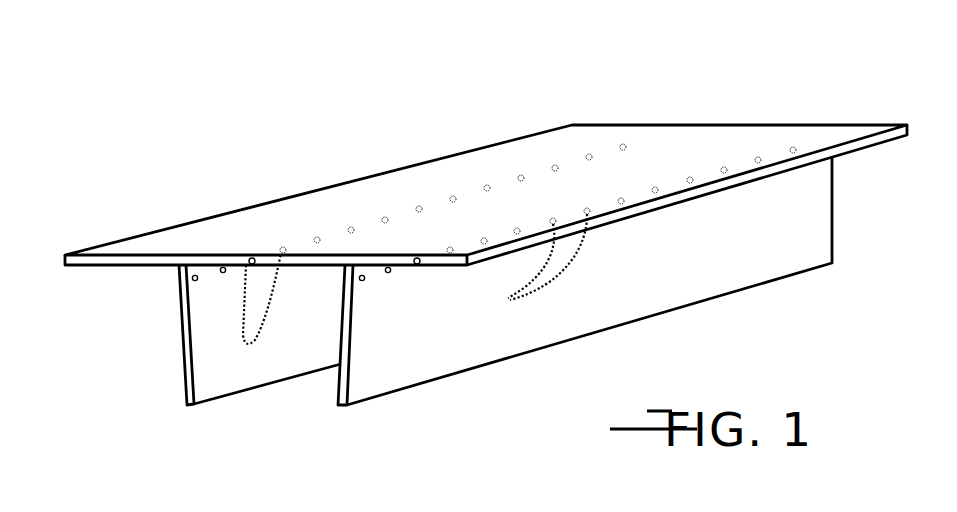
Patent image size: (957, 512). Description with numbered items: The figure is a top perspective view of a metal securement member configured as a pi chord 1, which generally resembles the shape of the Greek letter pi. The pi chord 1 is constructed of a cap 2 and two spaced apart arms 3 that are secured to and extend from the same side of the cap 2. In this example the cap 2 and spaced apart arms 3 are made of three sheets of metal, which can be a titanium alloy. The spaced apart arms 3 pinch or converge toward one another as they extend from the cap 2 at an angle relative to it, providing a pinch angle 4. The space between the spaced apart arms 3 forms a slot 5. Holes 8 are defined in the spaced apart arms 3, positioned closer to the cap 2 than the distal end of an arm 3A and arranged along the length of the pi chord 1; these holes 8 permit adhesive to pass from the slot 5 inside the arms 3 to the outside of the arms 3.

The pi chord 1 is at (486, 256).
The cap 2 is at (670, 145).
The spaced apart arms 3 is at (180, 348).
The distal end of an arm 3A is at (360, 392).
The pinch angle 4 is at (305, 274).
The slot 5 is at (286, 395).
The holes 8 is at (223, 273).